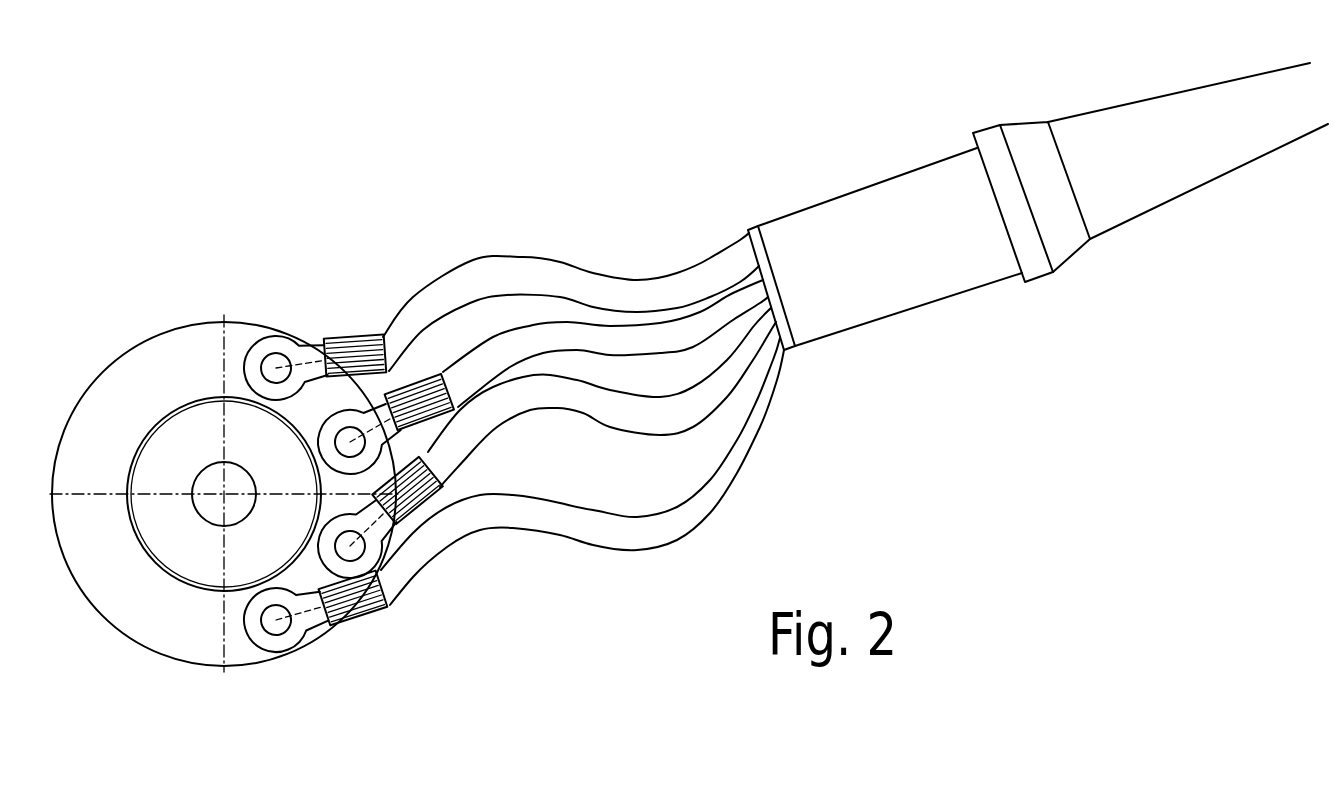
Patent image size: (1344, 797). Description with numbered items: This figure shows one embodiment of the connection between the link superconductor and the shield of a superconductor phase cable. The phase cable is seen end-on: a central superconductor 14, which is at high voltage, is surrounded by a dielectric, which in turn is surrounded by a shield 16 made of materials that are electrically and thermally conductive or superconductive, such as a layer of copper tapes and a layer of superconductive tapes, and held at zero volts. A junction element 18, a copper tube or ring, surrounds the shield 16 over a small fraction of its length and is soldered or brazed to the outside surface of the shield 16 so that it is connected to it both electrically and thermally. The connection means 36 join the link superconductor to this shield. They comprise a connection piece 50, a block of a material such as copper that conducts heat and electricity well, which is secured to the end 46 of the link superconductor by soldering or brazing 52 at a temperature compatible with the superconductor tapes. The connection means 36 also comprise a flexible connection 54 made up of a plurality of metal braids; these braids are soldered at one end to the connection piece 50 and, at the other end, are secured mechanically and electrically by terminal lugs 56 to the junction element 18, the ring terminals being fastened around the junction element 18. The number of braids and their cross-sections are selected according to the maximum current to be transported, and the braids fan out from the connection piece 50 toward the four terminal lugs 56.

The central superconductor 14 is at (227, 482).
The shield 16 is at (168, 577).
The junction element 18 is at (97, 423).
The connection means 36 is at (1020, 258).
The end of the link superconductor 46 is at (1162, 187).
The connection piece 50 is at (903, 272).
The soldering or brazing 52 is at (1070, 245).
The flexible connection 54 is at (500, 273).
The terminal lugs 56 is at (297, 340).